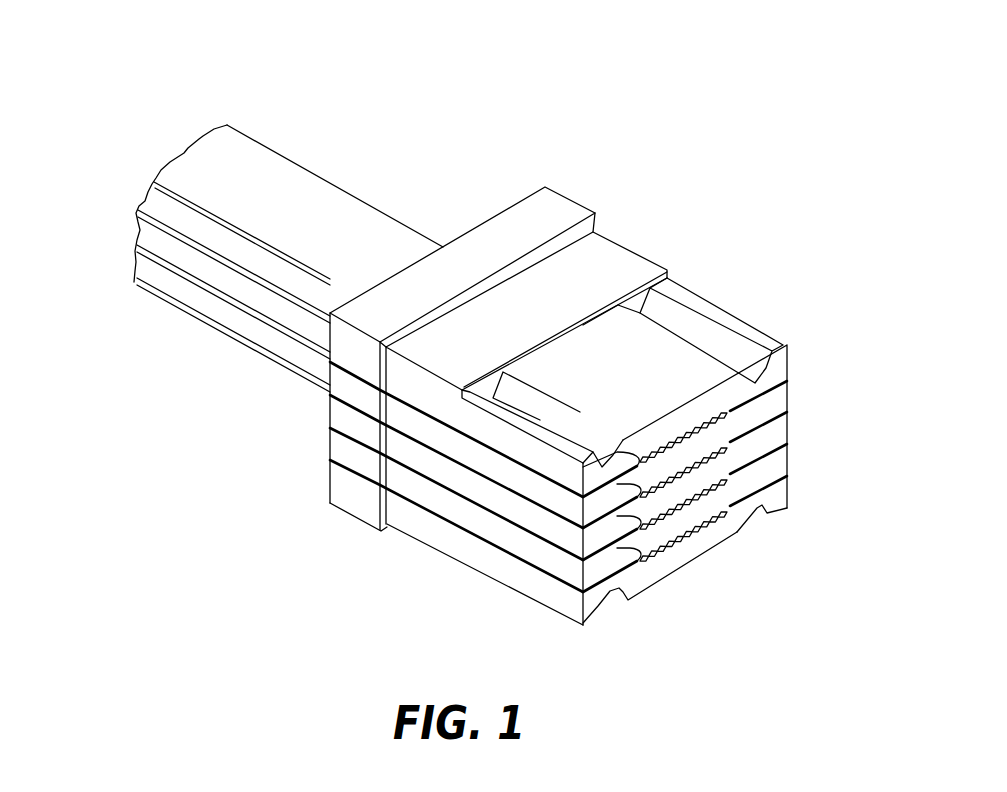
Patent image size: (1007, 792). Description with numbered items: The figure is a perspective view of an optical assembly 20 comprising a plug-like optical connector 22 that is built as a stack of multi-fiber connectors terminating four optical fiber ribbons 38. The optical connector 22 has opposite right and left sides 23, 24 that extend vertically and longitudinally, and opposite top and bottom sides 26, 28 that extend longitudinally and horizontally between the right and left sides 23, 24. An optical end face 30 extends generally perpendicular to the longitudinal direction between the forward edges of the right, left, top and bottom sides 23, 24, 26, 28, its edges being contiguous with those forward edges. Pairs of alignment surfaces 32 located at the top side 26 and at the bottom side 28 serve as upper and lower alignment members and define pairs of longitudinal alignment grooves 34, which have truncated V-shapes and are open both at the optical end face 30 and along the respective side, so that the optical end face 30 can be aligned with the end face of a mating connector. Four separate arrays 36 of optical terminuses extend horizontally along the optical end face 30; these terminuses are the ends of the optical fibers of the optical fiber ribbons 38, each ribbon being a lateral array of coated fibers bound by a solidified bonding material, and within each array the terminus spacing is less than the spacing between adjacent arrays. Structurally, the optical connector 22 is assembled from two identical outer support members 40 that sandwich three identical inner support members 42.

The optical assembly 20 is at (670, 102).
The plug-like optical connector 22 is at (641, 244).
The right side 23 is at (741, 492).
The left side 24 is at (438, 536).
The top side 26 is at (521, 235).
The bottom side 28 is at (715, 539).
The optical end face 30 is at (716, 541).
The alignment surfaces 32 is at (723, 352).
The alignment grooves 34 is at (766, 375).
The arrays of optical terminuses 36 is at (719, 438).
The optical fiber ribbons 38 is at (294, 214).
The outer support members 40 is at (583, 202).
The inner support members 42 is at (360, 457).